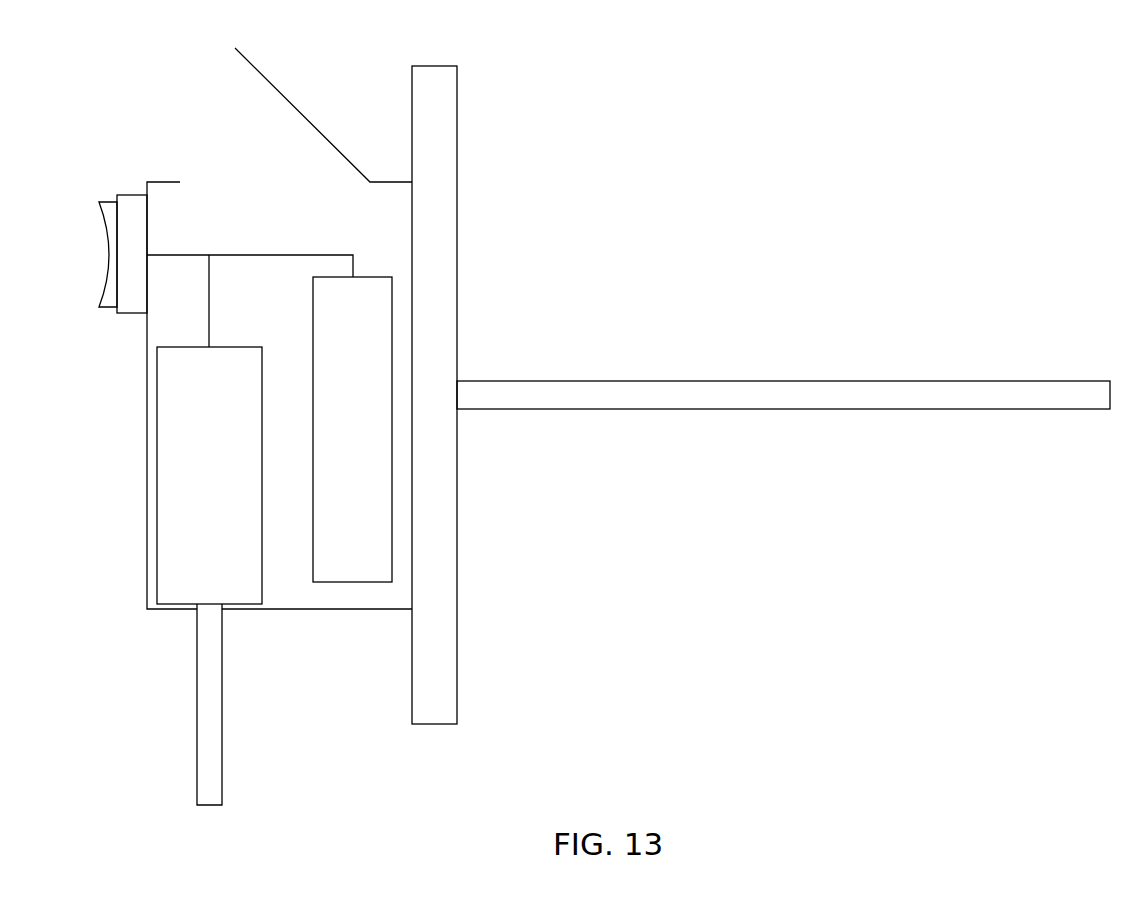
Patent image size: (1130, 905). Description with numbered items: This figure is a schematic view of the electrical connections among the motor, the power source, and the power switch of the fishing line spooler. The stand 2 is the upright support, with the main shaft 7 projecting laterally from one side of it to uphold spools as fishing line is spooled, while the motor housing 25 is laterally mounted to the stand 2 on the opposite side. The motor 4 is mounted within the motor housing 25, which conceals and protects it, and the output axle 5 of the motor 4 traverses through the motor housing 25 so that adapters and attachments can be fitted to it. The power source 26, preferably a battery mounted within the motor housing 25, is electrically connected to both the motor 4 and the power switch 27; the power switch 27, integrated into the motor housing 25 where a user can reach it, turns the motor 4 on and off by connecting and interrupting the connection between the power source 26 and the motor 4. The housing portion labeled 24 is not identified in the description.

The stand 2 is at (443, 66).
The motor housing 25 is at (292, 103).
The housing frame 24 is at (163, 182).
The power switch 27 is at (100, 300).
The motor 4 is at (262, 365).
The power source 26 is at (313, 405).
The output axle 5 is at (198, 683).
The main shaft 7 is at (697, 380).